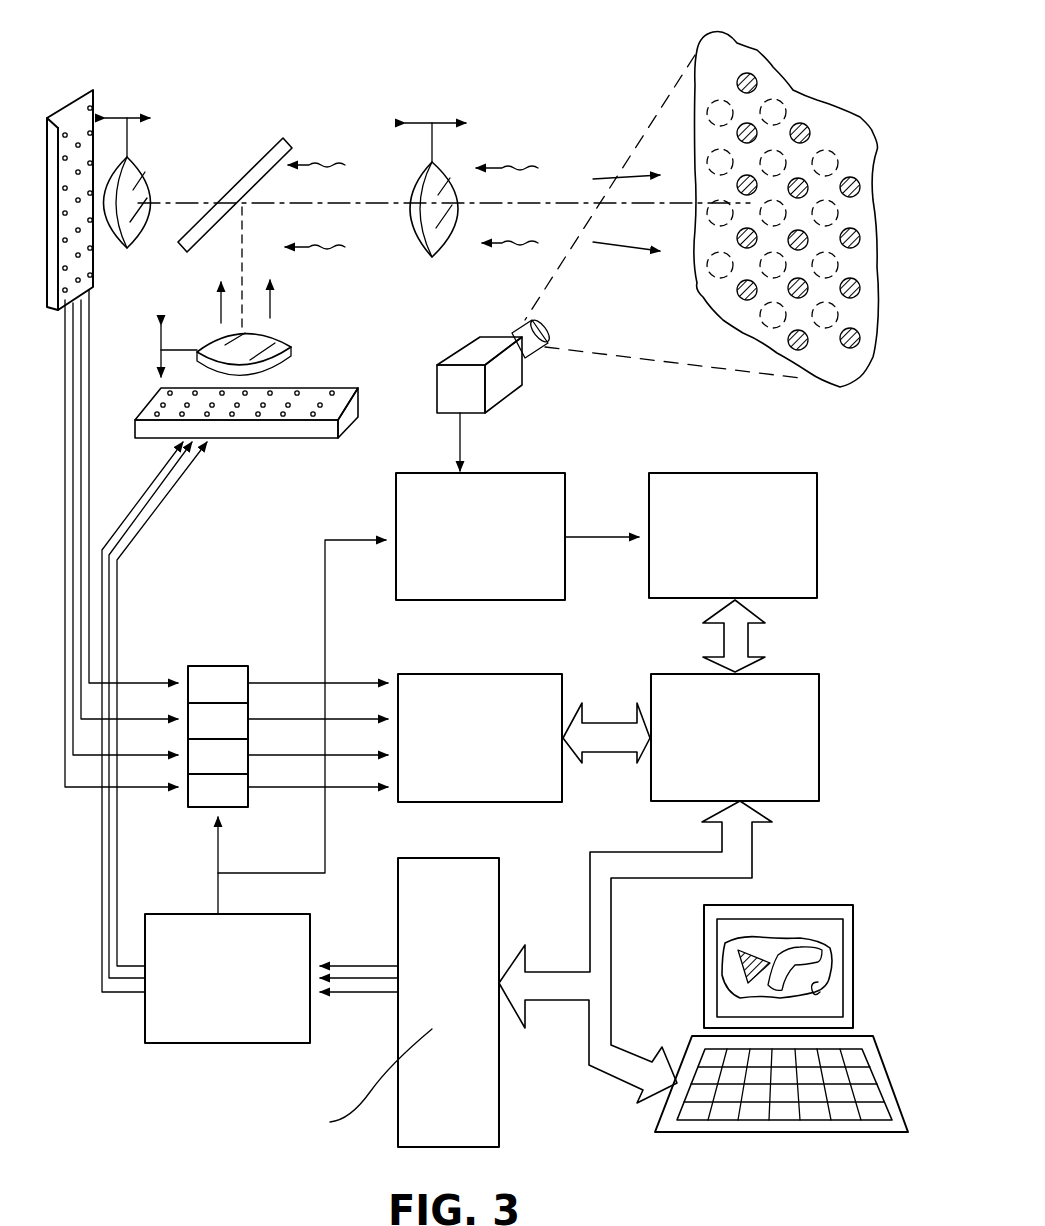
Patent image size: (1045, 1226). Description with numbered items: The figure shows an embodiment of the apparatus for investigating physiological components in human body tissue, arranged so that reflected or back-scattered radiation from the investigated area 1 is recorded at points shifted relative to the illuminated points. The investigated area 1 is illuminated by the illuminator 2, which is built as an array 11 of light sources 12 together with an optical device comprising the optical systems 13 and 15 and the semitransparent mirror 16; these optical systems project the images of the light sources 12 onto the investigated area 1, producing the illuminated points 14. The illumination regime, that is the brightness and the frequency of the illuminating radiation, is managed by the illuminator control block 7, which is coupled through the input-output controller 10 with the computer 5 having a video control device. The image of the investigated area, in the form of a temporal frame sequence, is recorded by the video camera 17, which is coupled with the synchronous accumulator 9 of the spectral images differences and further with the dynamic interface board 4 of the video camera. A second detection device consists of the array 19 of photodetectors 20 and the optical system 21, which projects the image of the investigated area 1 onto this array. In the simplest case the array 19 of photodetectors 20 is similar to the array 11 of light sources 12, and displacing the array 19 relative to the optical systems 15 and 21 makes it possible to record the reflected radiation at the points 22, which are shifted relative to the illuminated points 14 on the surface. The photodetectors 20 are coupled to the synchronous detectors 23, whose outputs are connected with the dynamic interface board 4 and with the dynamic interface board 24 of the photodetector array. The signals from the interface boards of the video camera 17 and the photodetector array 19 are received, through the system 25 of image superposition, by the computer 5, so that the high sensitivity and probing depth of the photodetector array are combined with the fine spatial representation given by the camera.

The investigated area 1 is at (787, 90).
The illuminator 2 is at (243, 428).
The dynamic interface board 4 is at (802, 470).
The computer with a video control device 5 is at (853, 972).
The illuminator control block 7 is at (222, 1016).
The synchronous accumulator of the spectral images differences 9 is at (549, 470).
The input-output controller 10 is at (460, 897).
The array of light sources 11 is at (155, 389).
The light sources 12 is at (297, 393).
The optical system 13 is at (282, 342).
The illuminated points 14 is at (805, 126).
The optical system 15 is at (440, 162).
The semitransparent mirror 16 is at (286, 146).
The video camera 17 is at (510, 380).
The array of photodetectors 19 is at (82, 70).
The photodetectors 20 is at (93, 130).
The optical system 21 is at (137, 176).
The points 22 is at (840, 212).
The synchronous detectors 23 is at (233, 677).
The dynamic interface board of the photodetectors array 24 is at (546, 673).
The system of the image superposition 25 is at (804, 673).